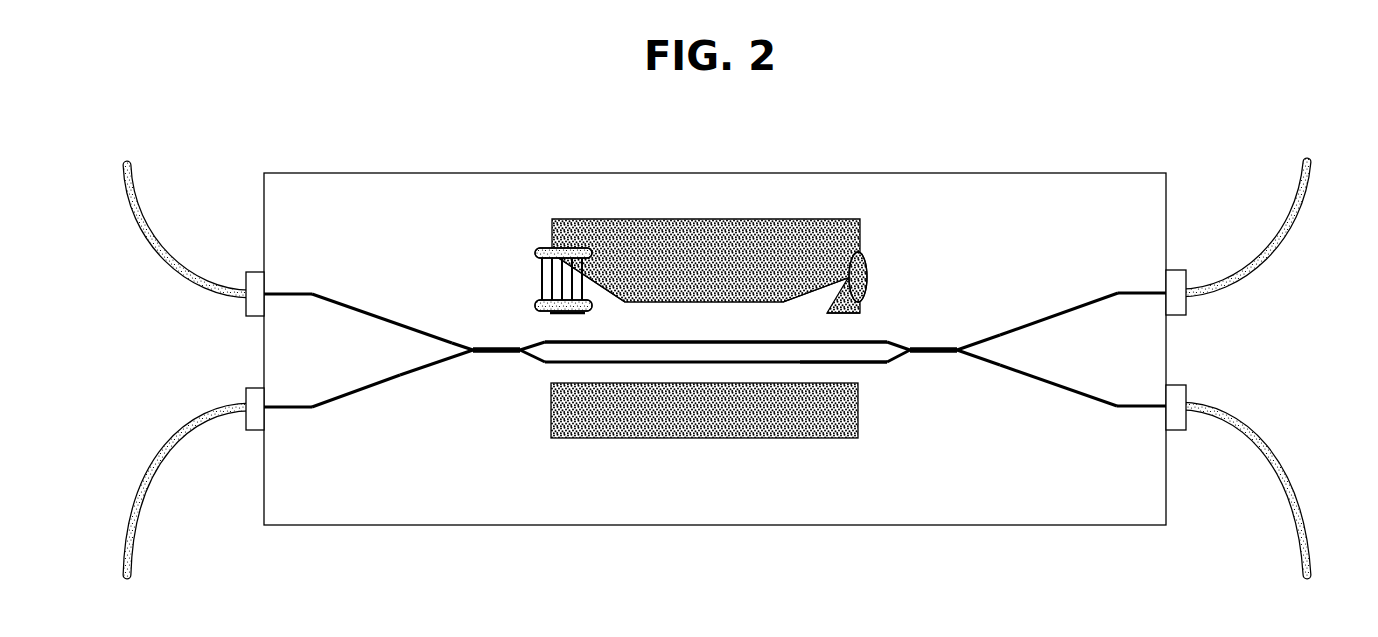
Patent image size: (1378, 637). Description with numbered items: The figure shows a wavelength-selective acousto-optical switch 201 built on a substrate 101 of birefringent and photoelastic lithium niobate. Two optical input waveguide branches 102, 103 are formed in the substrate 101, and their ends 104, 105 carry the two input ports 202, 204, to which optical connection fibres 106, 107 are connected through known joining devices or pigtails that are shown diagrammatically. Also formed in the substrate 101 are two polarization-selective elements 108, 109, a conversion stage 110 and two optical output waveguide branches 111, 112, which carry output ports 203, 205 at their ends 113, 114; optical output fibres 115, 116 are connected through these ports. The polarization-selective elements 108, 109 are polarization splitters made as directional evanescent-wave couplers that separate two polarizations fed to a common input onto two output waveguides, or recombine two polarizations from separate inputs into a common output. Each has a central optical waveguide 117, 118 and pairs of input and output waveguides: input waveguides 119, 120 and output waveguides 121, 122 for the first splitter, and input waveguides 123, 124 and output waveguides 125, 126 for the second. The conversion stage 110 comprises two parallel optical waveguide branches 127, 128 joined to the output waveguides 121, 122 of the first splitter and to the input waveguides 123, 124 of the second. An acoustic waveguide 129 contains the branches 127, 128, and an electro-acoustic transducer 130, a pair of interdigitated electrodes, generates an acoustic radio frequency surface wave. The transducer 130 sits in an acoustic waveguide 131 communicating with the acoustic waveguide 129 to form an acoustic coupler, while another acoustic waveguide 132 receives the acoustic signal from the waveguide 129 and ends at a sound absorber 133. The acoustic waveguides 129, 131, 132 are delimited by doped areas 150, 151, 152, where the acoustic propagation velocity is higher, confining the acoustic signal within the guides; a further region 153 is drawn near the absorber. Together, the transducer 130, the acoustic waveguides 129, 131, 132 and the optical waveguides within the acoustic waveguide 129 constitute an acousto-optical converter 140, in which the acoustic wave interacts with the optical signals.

The acousto-optical switch 201 is at (715, 307).
The substrate 101 is at (1085, 178).
The optical input waveguide branch 102 is at (378, 305).
The optical input waveguide branch 103 is at (350, 403).
The end of input waveguide branch 104 is at (296, 292).
The end of input waveguide branch 105 is at (300, 402).
The optical connection fibre 106 is at (150, 250).
The optical connection fibre 107 is at (132, 490).
The polarization-selective element 108 is at (470, 330).
The polarization-selective element 109 is at (965, 416).
The conversion stage 110 is at (672, 347).
The optical output waveguide branch 111 is at (1040, 323).
The optical output waveguide branch 112 is at (1093, 403).
The end of output waveguide branch 113 is at (1132, 291).
The end of output waveguide branch 114 is at (1140, 409).
The optical output fibre 115 is at (1300, 230).
The optical output fibre 116 is at (1305, 470).
The central optical waveguide 117 is at (493, 357).
The central optical waveguide 118 is at (941, 346).
The optical input waveguide 119 is at (451, 342).
The optical input waveguide 120 is at (453, 363).
The optical output waveguide 121 is at (520, 347).
The optical output waveguide 122 is at (530, 361).
The optical input waveguide 123 is at (897, 339).
The optical input waveguide 124 is at (893, 363).
The optical output waveguide 125 is at (977, 336).
The optical output waveguide 126 is at (970, 361).
The parallel optical waveguide branch 127 is at (762, 344).
The parallel optical waveguide branch 128 is at (863, 363).
The acoustic waveguide 129 is at (590, 368).
The electro-acoustic transducer 130 is at (586, 259).
The acoustic waveguide 131 is at (610, 292).
The acoustic waveguide 132 is at (826, 287).
The sound absorber 133 is at (867, 266).
The acousto-optical converter 140 is at (748, 307).
The doped area 150 is at (749, 260).
The doped area 151 is at (568, 312).
The doped area 152 is at (692, 440).
The electrode tab 153 is at (841, 315).
The input port 202 is at (270, 297).
The output port 203 is at (1162, 289).
The input port 204 is at (270, 409).
The output port 205 is at (1162, 404).